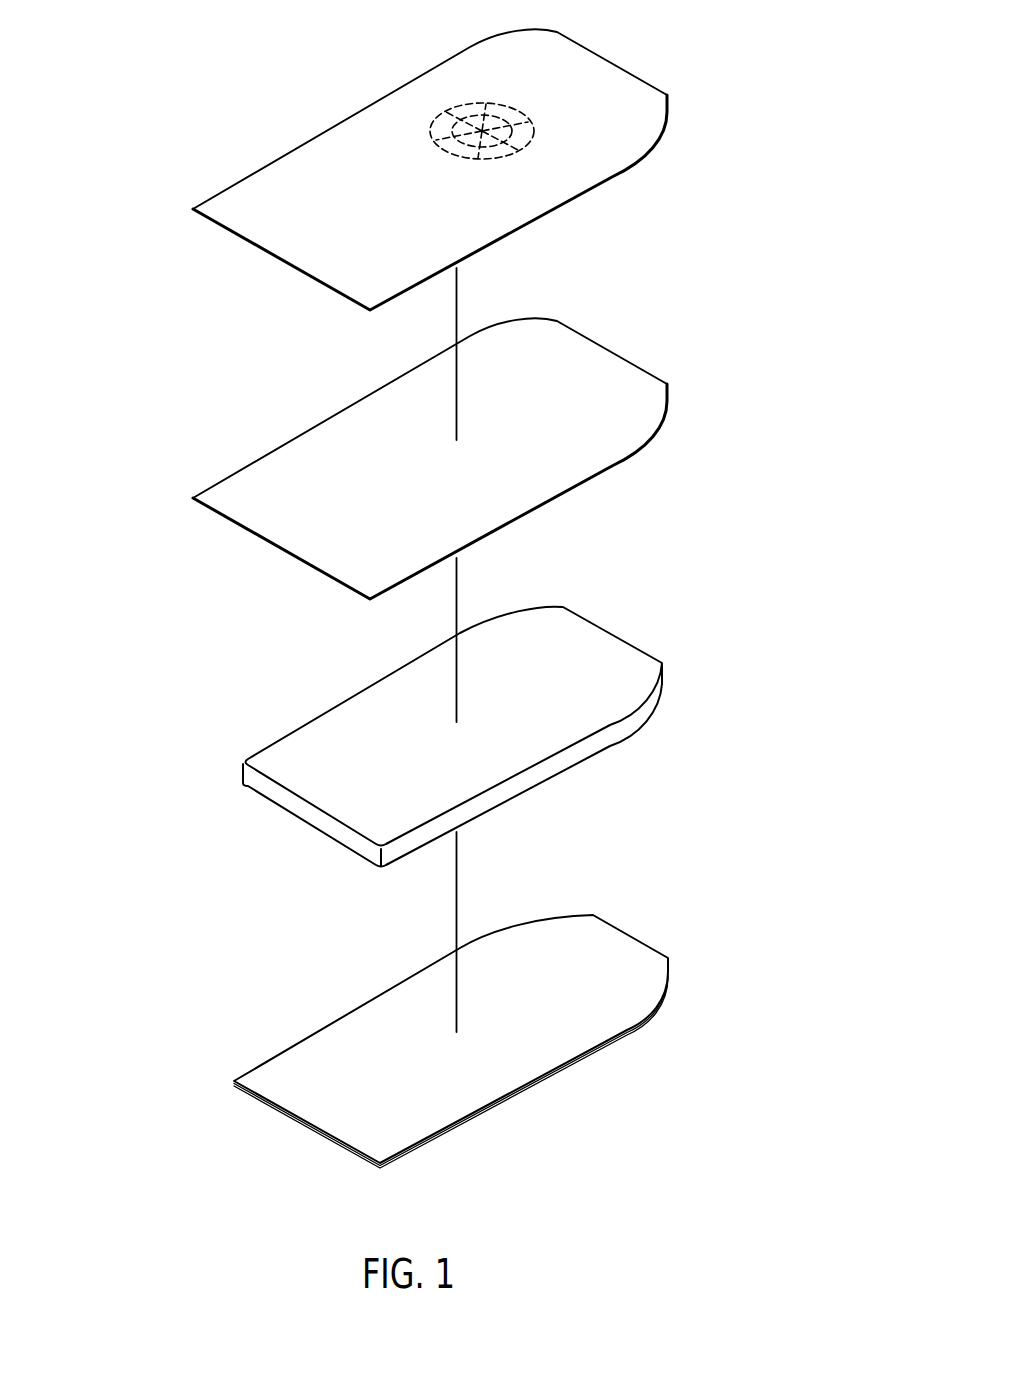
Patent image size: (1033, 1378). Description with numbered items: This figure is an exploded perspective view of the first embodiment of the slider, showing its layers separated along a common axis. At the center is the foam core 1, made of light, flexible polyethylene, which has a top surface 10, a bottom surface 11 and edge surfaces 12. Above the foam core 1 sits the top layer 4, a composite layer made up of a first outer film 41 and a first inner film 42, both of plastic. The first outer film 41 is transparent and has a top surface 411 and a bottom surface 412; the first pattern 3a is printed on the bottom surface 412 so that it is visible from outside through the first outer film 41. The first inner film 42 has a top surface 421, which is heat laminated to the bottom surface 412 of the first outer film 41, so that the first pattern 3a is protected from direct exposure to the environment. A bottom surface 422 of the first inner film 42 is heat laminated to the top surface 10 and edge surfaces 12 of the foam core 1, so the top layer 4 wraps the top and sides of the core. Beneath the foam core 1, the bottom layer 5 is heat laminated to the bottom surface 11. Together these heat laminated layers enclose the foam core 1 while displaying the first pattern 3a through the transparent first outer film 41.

The foam core 1 is at (459, 725).
The top surface 10 is at (562, 728).
The bottom surface 11 is at (537, 788).
The edge surfaces 12 is at (498, 798).
The first pattern 3a is at (448, 112).
The top layer 4 is at (718, 190).
The first outer film 41 is at (422, 155).
The top surface 411 is at (273, 185).
The bottom surface 412 is at (262, 252).
The first inner film 42 is at (412, 447).
The top surface 421 is at (240, 497).
The bottom surface 422 is at (232, 527).
The bottom layer 5 is at (652, 923).